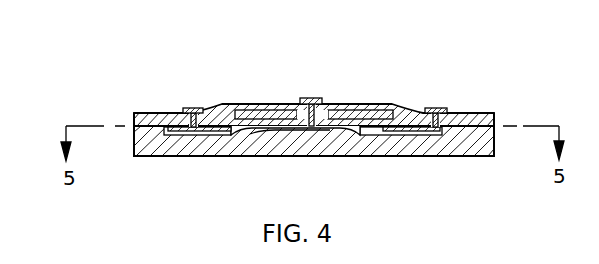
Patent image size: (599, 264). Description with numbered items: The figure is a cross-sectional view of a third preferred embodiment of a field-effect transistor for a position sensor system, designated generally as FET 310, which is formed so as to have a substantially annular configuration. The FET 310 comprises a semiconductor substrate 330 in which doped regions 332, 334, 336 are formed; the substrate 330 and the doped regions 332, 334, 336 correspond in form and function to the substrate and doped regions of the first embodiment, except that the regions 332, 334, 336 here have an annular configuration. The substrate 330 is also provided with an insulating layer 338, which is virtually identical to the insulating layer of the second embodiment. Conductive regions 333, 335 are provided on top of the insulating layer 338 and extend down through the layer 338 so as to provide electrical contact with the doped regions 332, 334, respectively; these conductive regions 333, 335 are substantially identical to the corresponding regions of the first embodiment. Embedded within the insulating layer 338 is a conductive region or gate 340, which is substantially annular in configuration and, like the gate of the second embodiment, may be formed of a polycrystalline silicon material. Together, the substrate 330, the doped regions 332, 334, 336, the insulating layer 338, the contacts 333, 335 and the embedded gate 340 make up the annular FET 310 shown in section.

The FET 310 is at (121, 66).
The semiconductor substrate 330 is at (160, 156).
The doped region 332 is at (212, 134).
The conductive region 333 is at (198, 108).
The doped region 334 is at (326, 130).
The conductive region 335 is at (310, 98).
The doped region 336 is at (257, 134).
The insulating layer 338 is at (134, 118).
The gate 340 is at (250, 110).